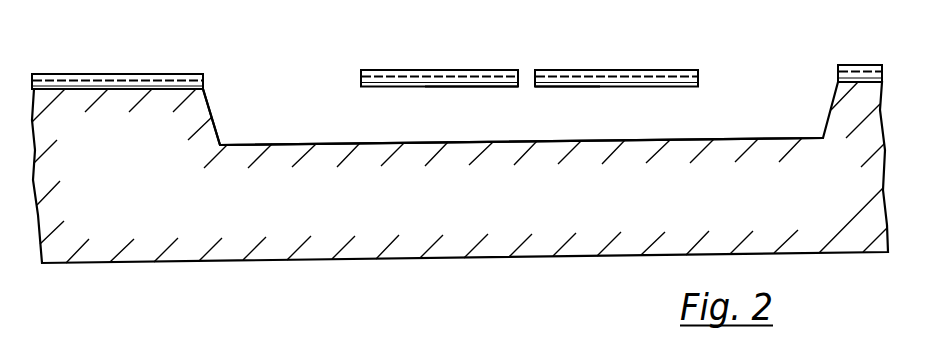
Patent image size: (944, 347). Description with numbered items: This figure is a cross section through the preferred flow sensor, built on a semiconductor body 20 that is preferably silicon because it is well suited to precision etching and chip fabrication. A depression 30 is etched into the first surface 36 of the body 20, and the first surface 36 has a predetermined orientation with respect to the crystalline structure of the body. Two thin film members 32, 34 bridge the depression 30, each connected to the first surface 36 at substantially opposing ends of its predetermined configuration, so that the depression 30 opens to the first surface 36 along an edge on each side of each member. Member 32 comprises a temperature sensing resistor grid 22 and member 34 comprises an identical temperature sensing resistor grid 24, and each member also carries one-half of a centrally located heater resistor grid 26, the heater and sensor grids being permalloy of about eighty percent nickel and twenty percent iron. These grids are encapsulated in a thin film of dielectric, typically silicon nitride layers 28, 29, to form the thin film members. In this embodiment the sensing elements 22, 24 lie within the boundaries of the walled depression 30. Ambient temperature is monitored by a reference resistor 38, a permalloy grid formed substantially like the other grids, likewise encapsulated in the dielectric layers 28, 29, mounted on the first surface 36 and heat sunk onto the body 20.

The semiconductor body 20 is at (476, 209).
The temperature sensing resistor grid 22 is at (458, 63).
The temperature sensing resistor grid 24 is at (690, 62).
The heater resistor grid 26 is at (583, 64).
The dielectric layer 28 is at (203, 74).
The dielectric layer 29 is at (205, 87).
The depression 30 is at (516, 134).
The thin film member 32 is at (440, 91).
The thin film member 34 is at (583, 89).
The first surface 36 is at (160, 90).
The reference resistor 38 is at (182, 70).